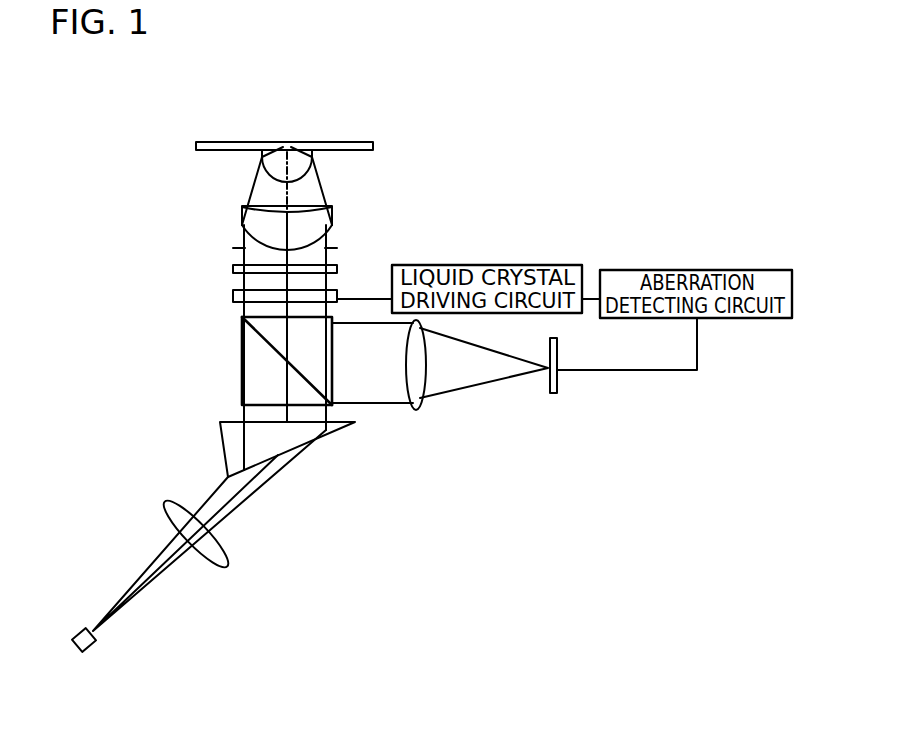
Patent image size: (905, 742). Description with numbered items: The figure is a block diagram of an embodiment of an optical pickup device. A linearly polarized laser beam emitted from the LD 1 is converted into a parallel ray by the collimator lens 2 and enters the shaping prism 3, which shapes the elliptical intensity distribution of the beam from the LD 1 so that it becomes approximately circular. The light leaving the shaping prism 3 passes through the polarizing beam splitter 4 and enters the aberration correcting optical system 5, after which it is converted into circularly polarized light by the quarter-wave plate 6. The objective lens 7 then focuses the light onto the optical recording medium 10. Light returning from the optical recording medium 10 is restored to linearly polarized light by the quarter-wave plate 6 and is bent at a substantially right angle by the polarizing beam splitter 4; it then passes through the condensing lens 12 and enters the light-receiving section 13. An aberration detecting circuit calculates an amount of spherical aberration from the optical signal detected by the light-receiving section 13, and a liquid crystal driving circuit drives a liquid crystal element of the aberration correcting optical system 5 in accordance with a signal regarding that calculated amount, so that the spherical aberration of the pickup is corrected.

The LD (laser diode) 1 is at (97, 640).
The collimator lens 2 is at (225, 563).
The shaping prism 3 is at (323, 440).
The polarizing beam splitter 4 is at (243, 362).
The aberration correcting optical system 5 is at (235, 300).
The quarter-wave plate 6 is at (237, 265).
The objective lens 7 is at (332, 208).
The optical recording medium 10 is at (370, 152).
The condensing lens 12 is at (420, 393).
The light-receiving section 13 is at (557, 388).